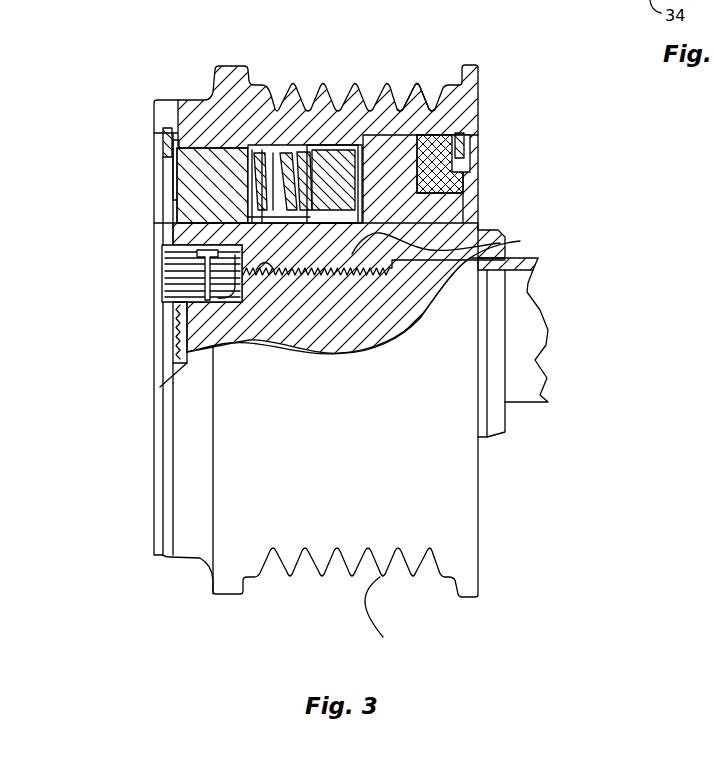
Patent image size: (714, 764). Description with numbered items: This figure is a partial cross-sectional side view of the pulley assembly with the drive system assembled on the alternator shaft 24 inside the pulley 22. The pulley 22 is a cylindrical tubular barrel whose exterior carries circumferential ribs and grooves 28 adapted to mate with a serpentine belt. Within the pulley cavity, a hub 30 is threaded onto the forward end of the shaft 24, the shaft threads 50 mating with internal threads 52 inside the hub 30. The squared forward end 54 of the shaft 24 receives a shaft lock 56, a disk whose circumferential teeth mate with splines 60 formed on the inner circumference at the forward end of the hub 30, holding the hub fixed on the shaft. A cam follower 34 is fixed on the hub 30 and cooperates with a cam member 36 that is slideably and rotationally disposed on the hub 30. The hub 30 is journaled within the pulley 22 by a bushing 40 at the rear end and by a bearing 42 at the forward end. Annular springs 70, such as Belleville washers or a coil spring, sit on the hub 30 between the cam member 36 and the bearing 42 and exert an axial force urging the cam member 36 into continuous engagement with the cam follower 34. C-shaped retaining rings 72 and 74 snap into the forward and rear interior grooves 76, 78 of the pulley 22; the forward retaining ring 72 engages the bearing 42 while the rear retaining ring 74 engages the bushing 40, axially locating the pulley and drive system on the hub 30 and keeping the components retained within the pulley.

The pulley 22 is at (213, 100).
The alternator shaft 24 is at (528, 344).
The ribs and grooves 28 is at (315, 580).
The hub 30 is at (503, 243).
The cam follower 34 is at (380, 160).
The cam member 36 is at (327, 160).
The bushing 40 is at (424, 132).
The bearing 42 is at (200, 198).
The threads 50 is at (262, 270).
The internal threads 52 is at (487, 241).
The forward end of shaft 54 is at (182, 347).
The shaft lock 56 is at (165, 325).
The splines 60 is at (175, 298).
The annular springs 70 is at (269, 148).
The forward retaining ring 72 is at (168, 162).
The rear retaining ring 74 is at (463, 167).
The forward groove 76 is at (163, 128).
The rear groove 78 is at (460, 128).